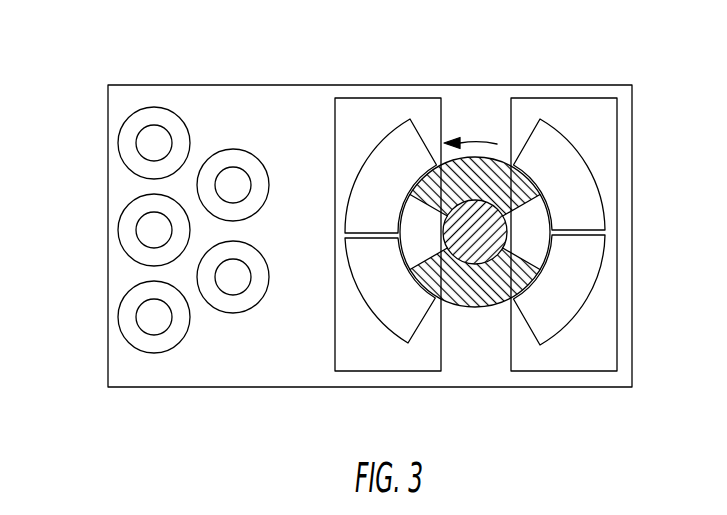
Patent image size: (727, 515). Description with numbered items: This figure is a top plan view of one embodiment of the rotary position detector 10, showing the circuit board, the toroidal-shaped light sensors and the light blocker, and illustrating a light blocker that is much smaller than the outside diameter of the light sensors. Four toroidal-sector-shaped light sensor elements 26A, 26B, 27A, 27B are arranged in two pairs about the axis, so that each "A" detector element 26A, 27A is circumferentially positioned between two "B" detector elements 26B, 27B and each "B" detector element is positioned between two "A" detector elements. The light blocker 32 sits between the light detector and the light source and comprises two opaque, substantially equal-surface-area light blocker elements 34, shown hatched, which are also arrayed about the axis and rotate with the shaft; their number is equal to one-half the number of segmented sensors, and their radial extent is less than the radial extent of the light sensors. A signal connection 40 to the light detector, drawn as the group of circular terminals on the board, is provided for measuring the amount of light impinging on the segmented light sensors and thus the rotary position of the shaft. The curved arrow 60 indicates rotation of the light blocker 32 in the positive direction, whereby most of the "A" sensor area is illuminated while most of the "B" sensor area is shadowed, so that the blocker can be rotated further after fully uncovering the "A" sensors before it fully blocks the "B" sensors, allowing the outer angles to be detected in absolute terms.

The rotary position detector 10 is at (652, 112).
The "A" detector element 26A is at (575, 202).
The "B" detector element 26B is at (582, 275).
The "A" detector element 27A is at (387, 300).
The "B" detector element 27B is at (387, 163).
The light blocker 32 is at (476, 326).
The light blocker elements 34 is at (503, 213).
The signal connection 40 is at (205, 282).
The rotation direction 60 is at (478, 138).